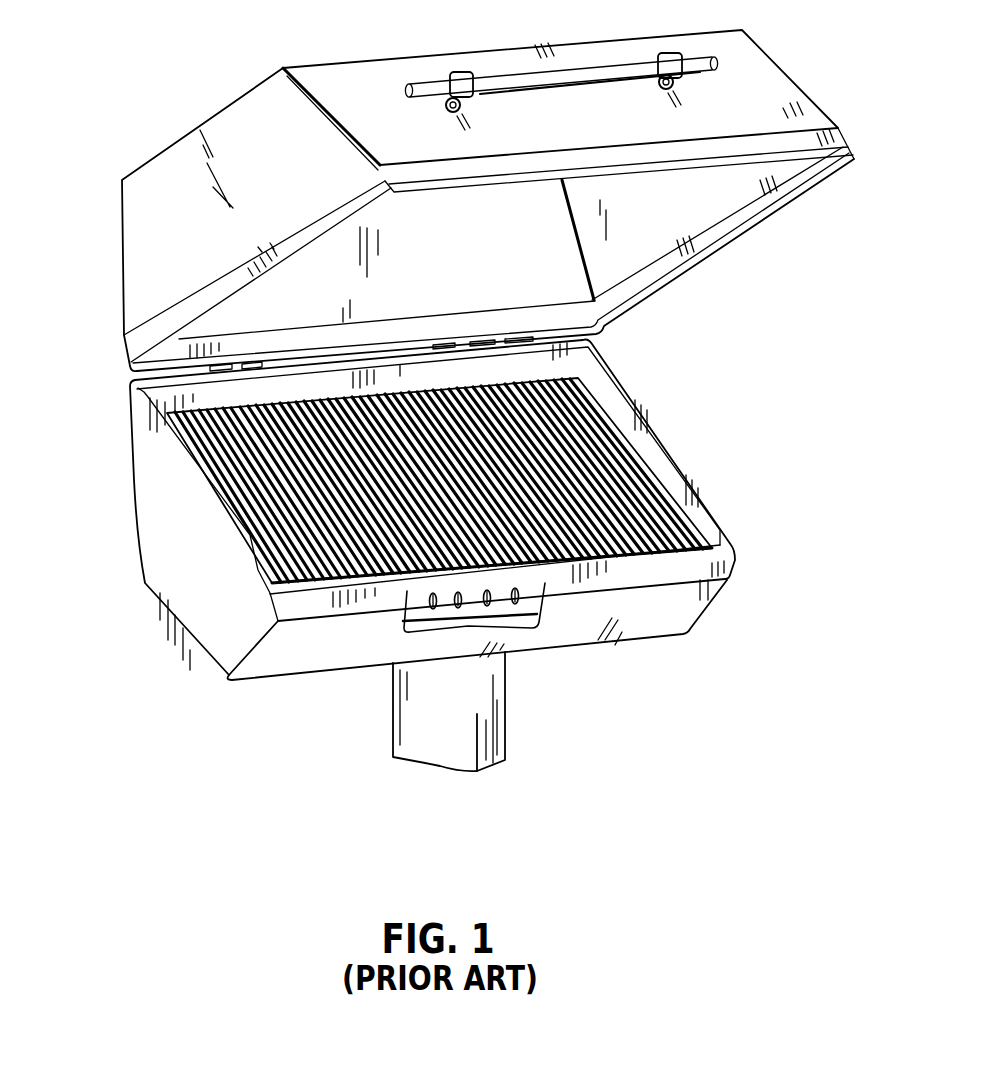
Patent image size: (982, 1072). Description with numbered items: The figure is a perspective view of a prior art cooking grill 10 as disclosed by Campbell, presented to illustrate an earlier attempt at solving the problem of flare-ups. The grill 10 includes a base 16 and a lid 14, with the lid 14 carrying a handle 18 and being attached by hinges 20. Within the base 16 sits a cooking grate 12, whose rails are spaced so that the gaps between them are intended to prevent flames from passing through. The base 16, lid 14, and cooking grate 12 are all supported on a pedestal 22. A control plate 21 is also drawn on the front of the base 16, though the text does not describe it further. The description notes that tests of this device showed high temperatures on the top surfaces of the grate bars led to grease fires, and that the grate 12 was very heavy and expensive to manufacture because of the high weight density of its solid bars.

The grill 10 is at (150, 121).
The cooking grate 12 is at (647, 447).
The lid 14 is at (123, 256).
The base 16 is at (131, 497).
The handle 18 is at (580, 74).
The hinges 20 is at (253, 362).
The control plate 21 is at (504, 610).
The pedestal 22 is at (474, 720).